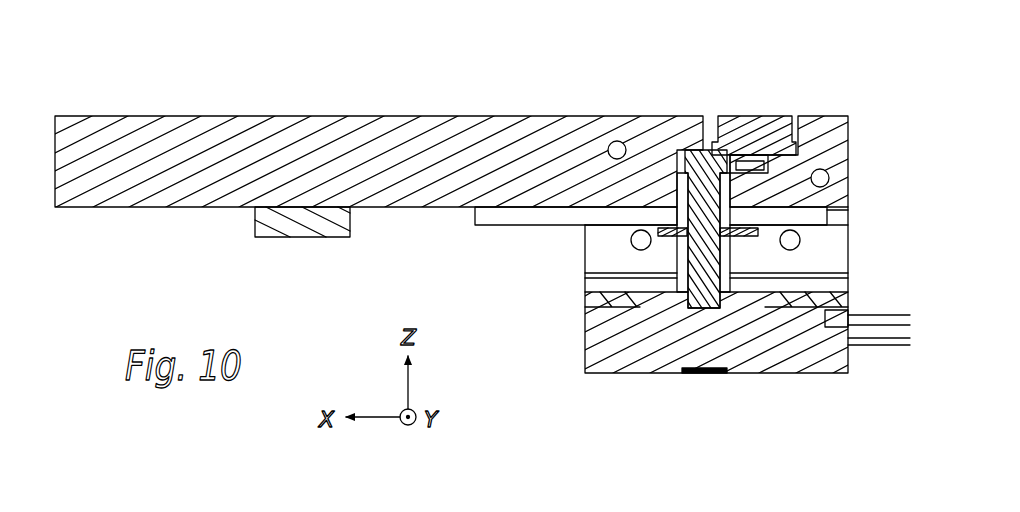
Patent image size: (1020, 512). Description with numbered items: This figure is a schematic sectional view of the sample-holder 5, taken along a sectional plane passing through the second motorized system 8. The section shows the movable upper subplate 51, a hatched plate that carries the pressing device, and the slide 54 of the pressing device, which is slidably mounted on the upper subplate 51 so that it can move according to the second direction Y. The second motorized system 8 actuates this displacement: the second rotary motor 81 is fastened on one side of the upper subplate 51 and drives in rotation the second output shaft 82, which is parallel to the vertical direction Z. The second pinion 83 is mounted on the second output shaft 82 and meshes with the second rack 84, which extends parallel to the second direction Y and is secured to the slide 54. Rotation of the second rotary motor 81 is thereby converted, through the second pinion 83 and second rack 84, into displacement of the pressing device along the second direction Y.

The sample-holder 5 is at (451, 148).
The upper subplate 51 is at (278, 140).
The slide 54 is at (770, 130).
The second motorized system 8 is at (747, 260).
The second rotary motor 81 is at (632, 368).
The second output shaft 82 is at (700, 243).
The second pinion 83 is at (677, 157).
The second rack 84 is at (740, 158).